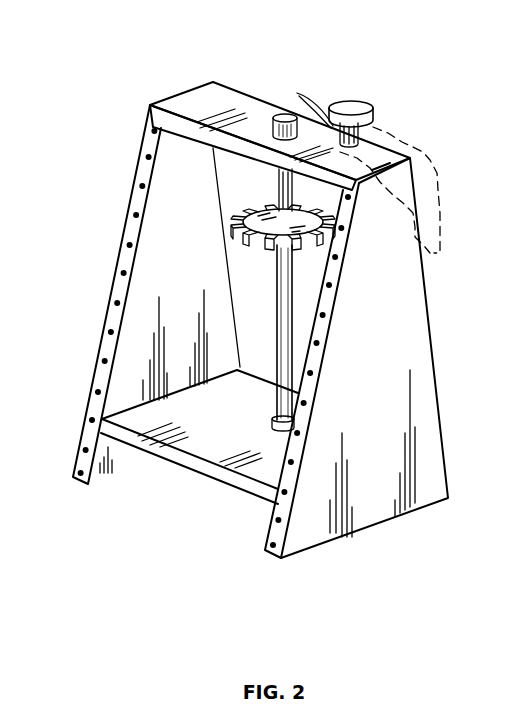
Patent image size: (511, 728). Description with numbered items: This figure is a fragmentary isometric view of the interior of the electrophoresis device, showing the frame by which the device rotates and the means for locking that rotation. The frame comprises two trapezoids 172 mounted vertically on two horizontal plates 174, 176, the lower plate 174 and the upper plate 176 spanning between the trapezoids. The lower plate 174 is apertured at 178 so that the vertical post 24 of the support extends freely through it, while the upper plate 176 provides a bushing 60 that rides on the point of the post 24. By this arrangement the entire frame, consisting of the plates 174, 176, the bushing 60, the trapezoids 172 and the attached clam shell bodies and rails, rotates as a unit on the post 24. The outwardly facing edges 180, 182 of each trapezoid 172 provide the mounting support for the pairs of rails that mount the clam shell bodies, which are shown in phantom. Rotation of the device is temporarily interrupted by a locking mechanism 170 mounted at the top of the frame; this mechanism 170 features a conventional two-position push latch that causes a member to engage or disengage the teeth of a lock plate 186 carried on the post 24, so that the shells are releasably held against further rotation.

The horizontal plate 176 is at (228, 105).
The bushing 60 is at (283, 112).
The locking mechanism 170 is at (372, 106).
The trapezoid 172 is at (122, 213).
The lock plate 186 is at (228, 239).
The vertical post 24 is at (284, 302).
The outwardly facing edge 180 is at (100, 363).
The outwardly facing edge 182 is at (313, 383).
The aperture 178 is at (274, 423).
The horizontal plate 174 is at (230, 473).